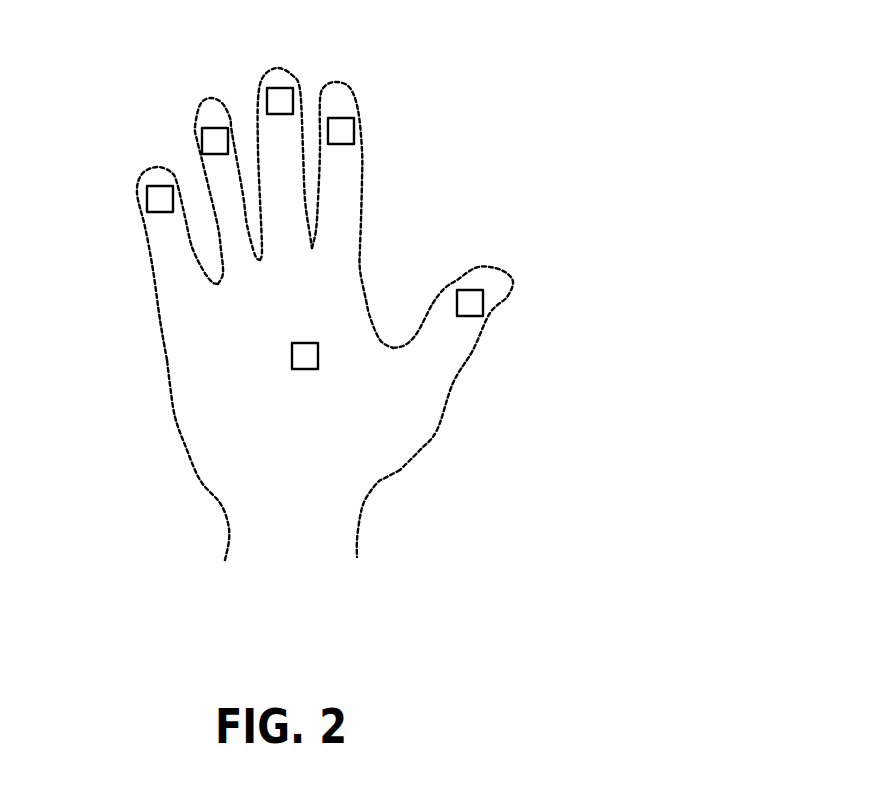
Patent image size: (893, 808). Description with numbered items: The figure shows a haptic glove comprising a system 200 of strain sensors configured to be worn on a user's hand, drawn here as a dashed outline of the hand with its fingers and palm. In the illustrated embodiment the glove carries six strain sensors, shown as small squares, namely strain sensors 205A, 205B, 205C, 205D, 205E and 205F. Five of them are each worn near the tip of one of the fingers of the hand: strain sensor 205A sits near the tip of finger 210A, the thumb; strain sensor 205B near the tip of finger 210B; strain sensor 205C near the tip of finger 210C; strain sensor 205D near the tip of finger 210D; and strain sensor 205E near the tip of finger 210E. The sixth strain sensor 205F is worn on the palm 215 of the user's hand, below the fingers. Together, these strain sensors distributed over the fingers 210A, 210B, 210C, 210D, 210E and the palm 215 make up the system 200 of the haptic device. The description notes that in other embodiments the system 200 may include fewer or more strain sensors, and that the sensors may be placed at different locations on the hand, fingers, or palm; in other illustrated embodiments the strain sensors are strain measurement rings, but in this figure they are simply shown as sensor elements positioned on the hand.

The system of strain sensors 200 is at (312, 611).
The strain sensor 205A is at (147, 198).
The strain sensor 205B is at (203, 148).
The strain sensor 205C is at (293, 97).
The strain sensor 205D is at (355, 132).
The strain sensor 205E is at (483, 300).
The strain sensor 205F is at (292, 358).
The finger 210A is at (152, 237).
The finger 210B is at (195, 113).
The finger 210C is at (275, 68).
The finger 210D is at (364, 170).
The finger 210E is at (482, 338).
The palm 215 is at (299, 427).